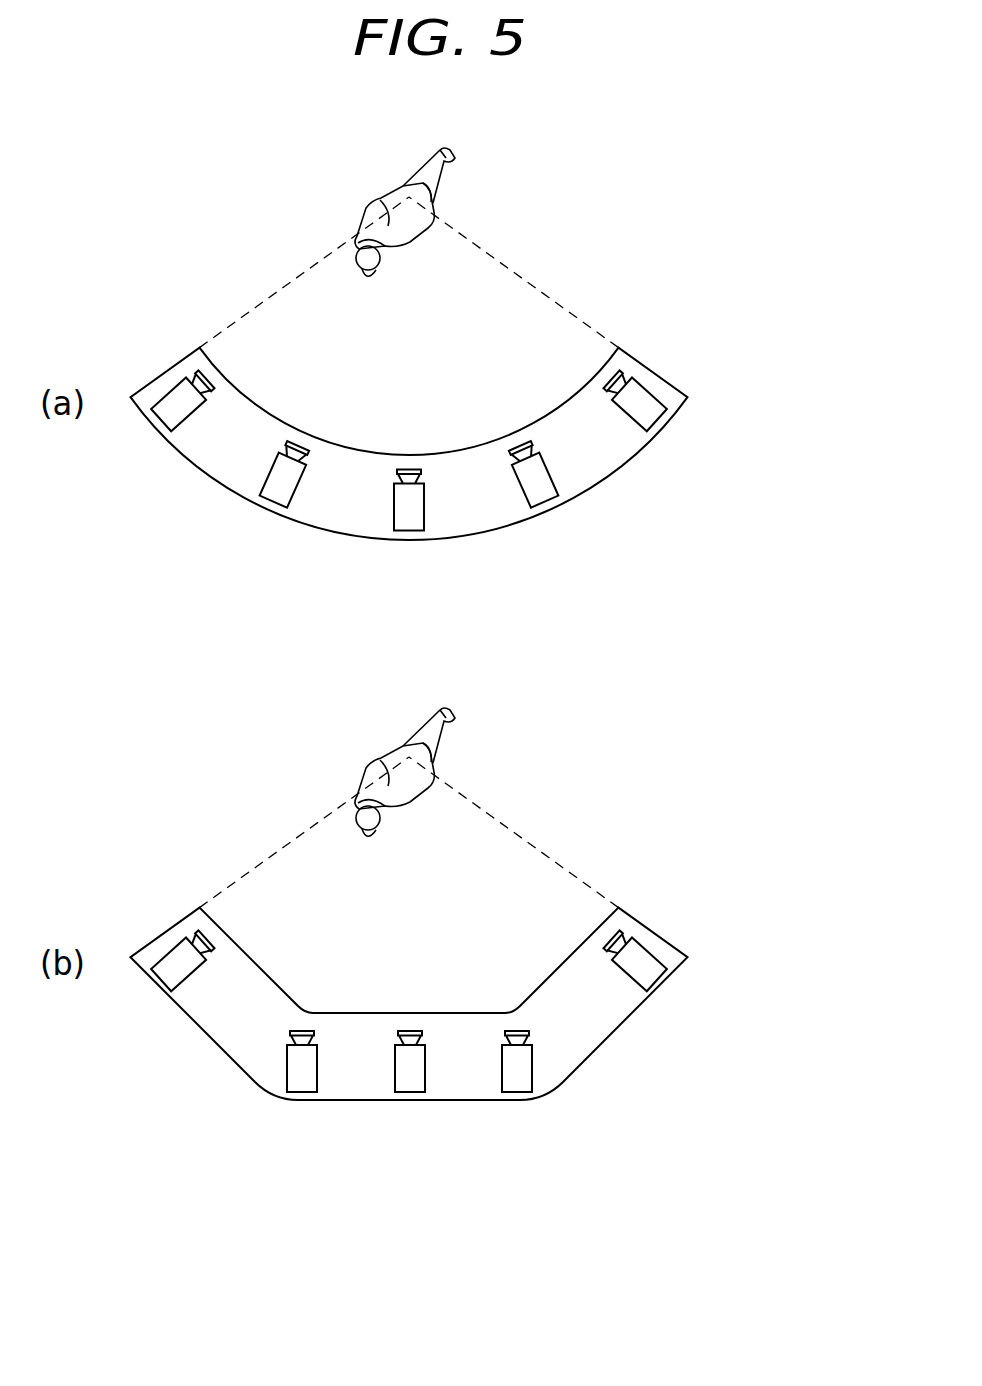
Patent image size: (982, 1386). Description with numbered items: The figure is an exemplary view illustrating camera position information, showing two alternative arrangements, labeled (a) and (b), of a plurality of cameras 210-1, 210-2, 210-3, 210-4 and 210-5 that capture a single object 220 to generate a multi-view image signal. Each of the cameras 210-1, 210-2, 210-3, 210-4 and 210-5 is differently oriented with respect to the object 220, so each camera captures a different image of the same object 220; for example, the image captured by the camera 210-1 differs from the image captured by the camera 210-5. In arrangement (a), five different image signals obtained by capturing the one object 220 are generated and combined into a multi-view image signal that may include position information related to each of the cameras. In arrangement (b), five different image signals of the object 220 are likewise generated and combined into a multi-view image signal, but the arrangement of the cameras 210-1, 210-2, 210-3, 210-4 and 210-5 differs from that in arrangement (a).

The object 220 is at (385, 207).
The camera 210-1 is at (166, 431).
The camera 210-2 is at (270, 506).
The camera 210-3 is at (407, 532).
The camera 210-4 is at (549, 506).
The camera 210-5 is at (653, 431).